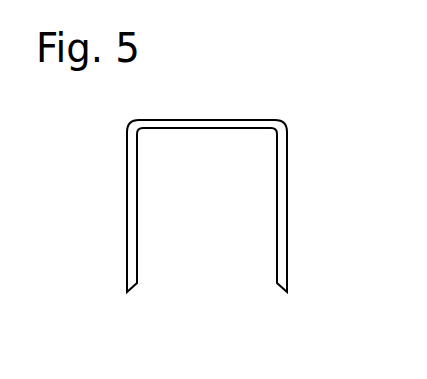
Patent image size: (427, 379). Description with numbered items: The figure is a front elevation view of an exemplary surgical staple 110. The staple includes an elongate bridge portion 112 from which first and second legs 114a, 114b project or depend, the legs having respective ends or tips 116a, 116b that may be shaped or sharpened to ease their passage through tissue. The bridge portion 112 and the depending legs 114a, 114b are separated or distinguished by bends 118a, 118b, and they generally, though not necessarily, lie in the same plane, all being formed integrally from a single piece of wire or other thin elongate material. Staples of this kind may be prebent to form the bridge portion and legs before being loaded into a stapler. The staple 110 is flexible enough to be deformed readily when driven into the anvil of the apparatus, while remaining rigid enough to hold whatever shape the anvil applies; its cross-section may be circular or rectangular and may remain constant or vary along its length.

The surgical staple 110 is at (251, 90).
The elongate bridge portion 112 is at (205, 119).
The first leg 114a is at (127, 236).
The second leg 114b is at (375, 238).
The end or tip of first leg 116a is at (212, 313).
The end or tip of second leg 116b is at (281, 291).
The first bend 118a is at (131, 121).
The second bend 118b is at (356, 126).